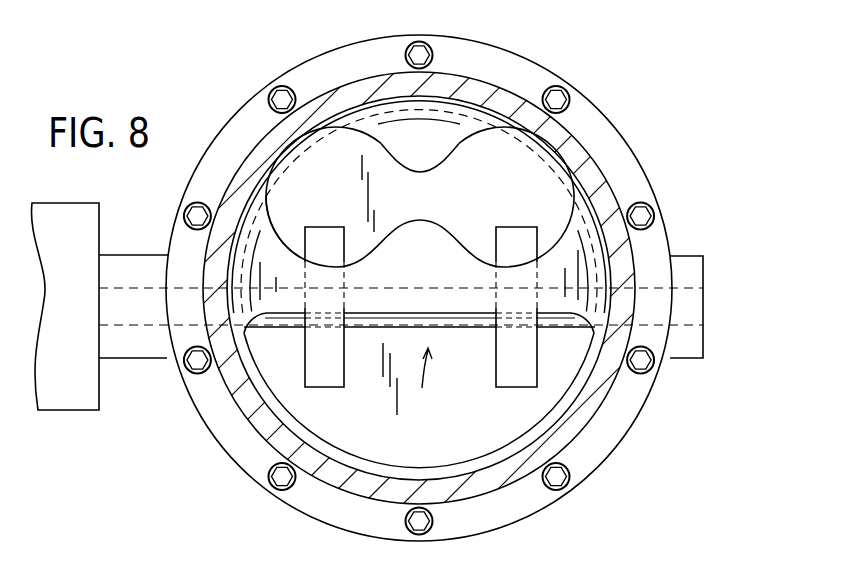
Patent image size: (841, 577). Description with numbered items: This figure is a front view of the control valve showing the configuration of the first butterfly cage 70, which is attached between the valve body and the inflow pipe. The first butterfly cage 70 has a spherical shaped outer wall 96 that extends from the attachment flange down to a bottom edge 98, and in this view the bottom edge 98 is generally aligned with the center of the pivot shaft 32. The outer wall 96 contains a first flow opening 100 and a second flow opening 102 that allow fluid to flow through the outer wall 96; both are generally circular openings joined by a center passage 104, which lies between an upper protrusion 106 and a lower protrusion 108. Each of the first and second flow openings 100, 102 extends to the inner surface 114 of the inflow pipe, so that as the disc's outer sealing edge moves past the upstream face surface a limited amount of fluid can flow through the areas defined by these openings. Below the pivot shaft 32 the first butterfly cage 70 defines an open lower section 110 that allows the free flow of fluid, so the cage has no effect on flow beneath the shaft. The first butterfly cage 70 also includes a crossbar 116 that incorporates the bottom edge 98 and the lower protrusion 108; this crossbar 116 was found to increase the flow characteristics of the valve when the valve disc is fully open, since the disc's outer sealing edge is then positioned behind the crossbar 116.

The pivot shaft 32 is at (656, 330).
The first butterfly cage 70 is at (427, 384).
The outer wall 96 is at (273, 243).
The bottom edge 98 is at (481, 313).
The first flow opening 100 is at (338, 145).
The second flow opening 102 is at (485, 145).
The center passage 104 is at (397, 174).
The upper protrusion 106 is at (439, 164).
The lower protrusion 108 is at (429, 236).
The open lower section 110 is at (320, 422).
The inner surface 114 is at (608, 210).
The crossbar 116 is at (374, 303).